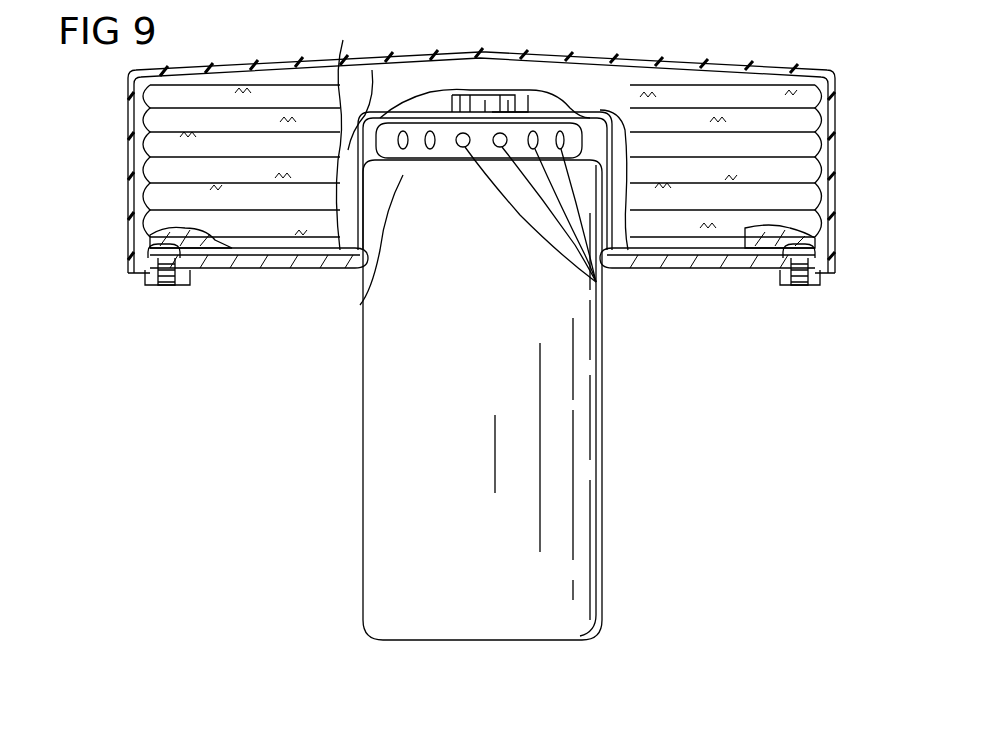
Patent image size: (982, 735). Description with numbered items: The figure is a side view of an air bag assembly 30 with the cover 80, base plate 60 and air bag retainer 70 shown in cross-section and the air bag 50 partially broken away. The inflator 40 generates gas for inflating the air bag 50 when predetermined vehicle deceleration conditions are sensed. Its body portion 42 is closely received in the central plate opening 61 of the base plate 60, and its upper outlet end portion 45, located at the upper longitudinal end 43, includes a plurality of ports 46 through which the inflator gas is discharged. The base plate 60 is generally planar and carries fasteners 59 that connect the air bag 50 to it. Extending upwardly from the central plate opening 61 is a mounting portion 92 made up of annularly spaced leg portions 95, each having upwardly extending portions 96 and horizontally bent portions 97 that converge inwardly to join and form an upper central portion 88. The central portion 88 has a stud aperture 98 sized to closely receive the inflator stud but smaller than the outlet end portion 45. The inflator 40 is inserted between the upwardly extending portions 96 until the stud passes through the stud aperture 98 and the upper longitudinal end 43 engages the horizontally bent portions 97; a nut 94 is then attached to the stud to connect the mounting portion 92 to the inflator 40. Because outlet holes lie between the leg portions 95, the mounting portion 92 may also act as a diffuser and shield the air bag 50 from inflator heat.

The air bag assembly 30 is at (692, 386).
The inflator 40 is at (606, 456).
The body portion 42 is at (603, 508).
The upper longitudinal end 43 is at (360, 305).
The upper outlet end portion 45 is at (372, 70).
The ports 46 is at (598, 283).
The air bag 50 is at (745, 88).
The fasteners 59 is at (167, 288).
The base plate 60 is at (700, 266).
The central plate opening 61 is at (367, 272).
The air bag retainer 70 is at (210, 255).
The cover 80 is at (257, 62).
The upper central portion 88 is at (440, 112).
The mounting portion 92 is at (552, 100).
The nut 94 is at (480, 112).
The leg portions 95 is at (618, 138).
The upwardly extending portions 96 is at (326, 131).
The horizontally bent portions 97 is at (395, 147).
The stud aperture 98 is at (502, 112).